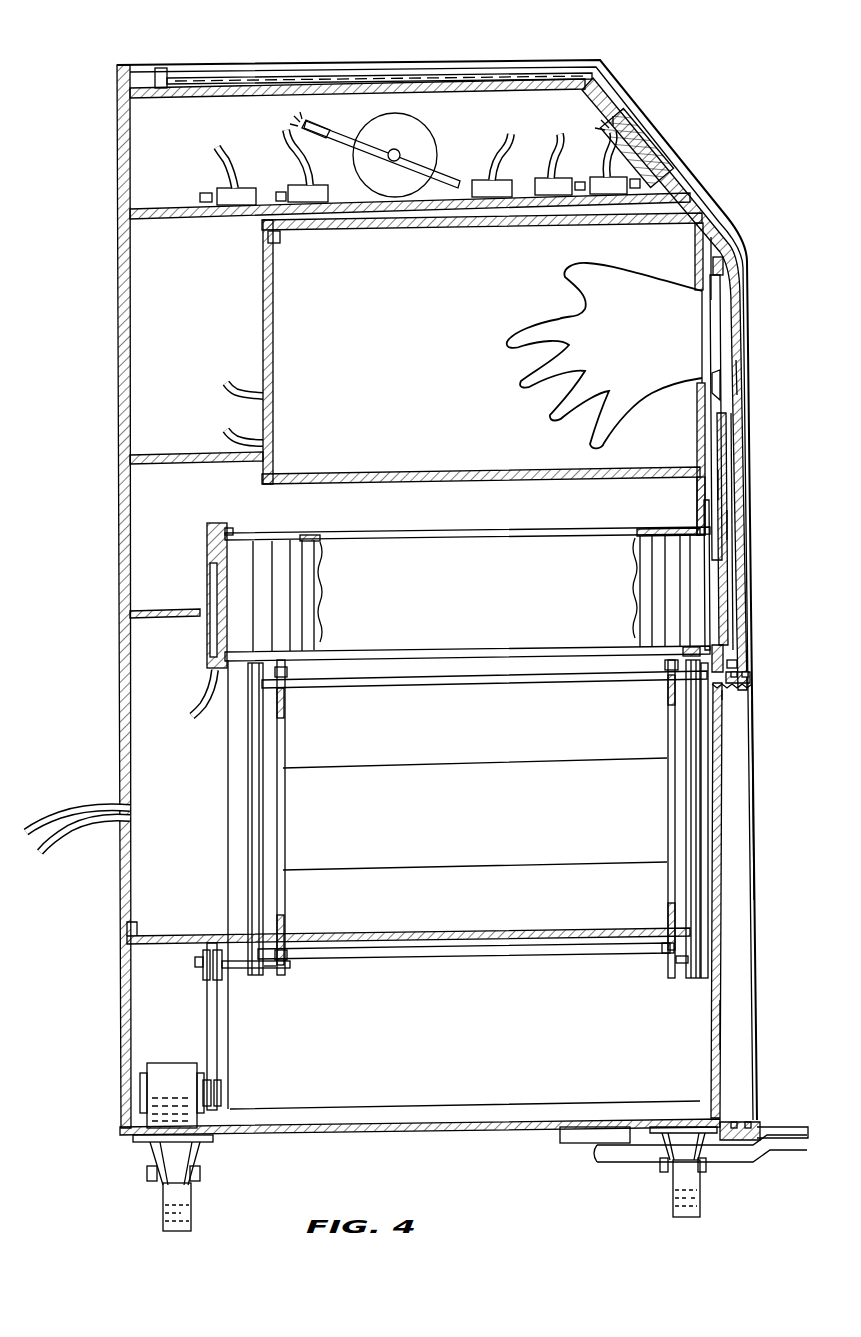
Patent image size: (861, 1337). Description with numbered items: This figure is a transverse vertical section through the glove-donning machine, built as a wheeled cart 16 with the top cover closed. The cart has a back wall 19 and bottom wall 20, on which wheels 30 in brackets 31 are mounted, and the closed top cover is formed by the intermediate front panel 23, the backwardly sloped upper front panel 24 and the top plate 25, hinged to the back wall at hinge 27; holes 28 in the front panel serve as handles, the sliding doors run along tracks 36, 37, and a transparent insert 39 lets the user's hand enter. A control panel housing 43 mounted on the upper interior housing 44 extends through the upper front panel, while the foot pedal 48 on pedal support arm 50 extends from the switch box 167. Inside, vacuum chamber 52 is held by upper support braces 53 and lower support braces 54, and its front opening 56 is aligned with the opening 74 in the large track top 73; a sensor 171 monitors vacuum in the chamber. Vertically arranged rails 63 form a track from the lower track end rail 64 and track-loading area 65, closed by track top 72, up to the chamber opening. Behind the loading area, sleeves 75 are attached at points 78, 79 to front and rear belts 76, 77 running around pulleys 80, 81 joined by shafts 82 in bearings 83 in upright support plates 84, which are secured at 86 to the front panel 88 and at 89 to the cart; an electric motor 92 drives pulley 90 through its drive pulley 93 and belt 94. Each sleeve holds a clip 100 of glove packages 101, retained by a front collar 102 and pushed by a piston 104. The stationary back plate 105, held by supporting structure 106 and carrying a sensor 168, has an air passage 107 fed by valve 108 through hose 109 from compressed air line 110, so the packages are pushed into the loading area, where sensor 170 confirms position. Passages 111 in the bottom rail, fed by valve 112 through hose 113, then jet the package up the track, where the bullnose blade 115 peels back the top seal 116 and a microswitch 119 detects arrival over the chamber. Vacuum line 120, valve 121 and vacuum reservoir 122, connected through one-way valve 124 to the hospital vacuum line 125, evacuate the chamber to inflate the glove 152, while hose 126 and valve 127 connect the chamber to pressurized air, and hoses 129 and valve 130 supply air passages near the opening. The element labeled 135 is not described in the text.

The wheeled cart 16 is at (316, 55).
The back wall 19 is at (117, 326).
The bottom wall 20 is at (360, 1136).
The intermediate front panel 23 is at (746, 586).
The upper front panel 24 is at (712, 208).
The top plate 25 is at (420, 64).
The hinge 27 is at (170, 73).
The holes 28 is at (751, 684).
The wheels 30 is at (673, 1210).
The brackets 31 is at (668, 1165).
The track 36 is at (724, 694).
The track 37 is at (736, 690).
The transparent insert 39 is at (741, 383).
The control panel housing 43 is at (620, 118).
The upper interior housing 44 is at (540, 74).
The foot pedal 48 is at (790, 1127).
The pedal support arm 50 is at (768, 1152).
The vacuum chamber 52 is at (262, 306).
The upper support braces 53 is at (183, 220).
The lower support braces 54 is at (173, 455).
The front opening 56 is at (714, 285).
The vertically arranged rails 63 is at (722, 496).
The lower track end rail 64 is at (748, 675).
The track-loading area 65 is at (712, 558).
The track top 72 is at (726, 533).
The track top 73 is at (727, 440).
The opening 74 is at (720, 312).
The sleeves 75 is at (478, 738).
The front belt 76 is at (668, 790).
The rear belt 77 is at (277, 808).
The attachment point 78 is at (684, 648).
The attachment point 79 is at (247, 688).
The front pulleys 80 is at (678, 962).
The rear pulleys 81 is at (276, 968).
The shafts 82 is at (367, 686).
The bearings 83 is at (286, 677).
The upright support plates 84 is at (284, 705).
The attachment location 86 is at (720, 935).
The front panel 88 is at (720, 1022).
The attachment location 89 is at (127, 940).
The pulley 90 is at (202, 972).
The electric motor 92 is at (166, 1066).
The drive pulley 93 is at (221, 1093).
The belt 94 is at (207, 1008).
The clip 100 is at (436, 532).
The glove packages 101 is at (707, 390).
The front collar 102 is at (700, 520).
The piston 104 is at (259, 540).
The back plate 105 is at (207, 540).
The supporting structure 106 is at (165, 610).
The air passage 107 is at (210, 626).
The valve 108 is at (218, 192).
The hose 109 is at (224, 150).
The compressed air line 110 is at (200, 197).
The passages 111 is at (736, 660).
The valve 112 is at (287, 160).
The hose 113 is at (310, 186).
The bullnose blade 115 is at (721, 390).
The top seal 116 is at (733, 458).
The microswitch 119 is at (720, 268).
The vacuum line 120 is at (506, 150).
The valve 121 is at (485, 180).
The vacuum reservoir 122 is at (406, 126).
The one-way valve 124 is at (345, 137).
The hospital vacuum line 125 is at (308, 124).
The hose 126 is at (559, 140).
The valve 127 is at (551, 178).
The hoses 129 is at (610, 177).
The valve 130 is at (622, 175).
The rear wall 135 is at (755, 793).
The glove 152 is at (540, 268).
The switch box 167 is at (580, 1143).
The sensor 168 is at (228, 527).
The sensor 170 is at (723, 658).
The sensor 171 is at (267, 239).